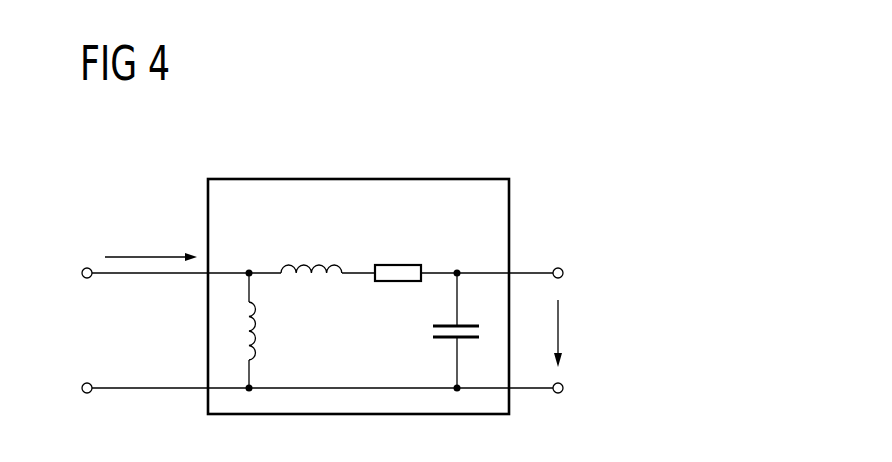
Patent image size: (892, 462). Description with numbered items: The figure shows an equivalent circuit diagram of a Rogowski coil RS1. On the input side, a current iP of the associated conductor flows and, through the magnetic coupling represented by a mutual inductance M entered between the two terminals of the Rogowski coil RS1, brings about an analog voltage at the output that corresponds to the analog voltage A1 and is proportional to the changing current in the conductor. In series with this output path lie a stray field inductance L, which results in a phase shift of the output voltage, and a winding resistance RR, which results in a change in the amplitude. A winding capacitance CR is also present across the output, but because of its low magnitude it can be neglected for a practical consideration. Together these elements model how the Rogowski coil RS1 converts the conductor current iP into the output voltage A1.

The Rogowski coil RS1 is at (386, 155).
The stray field inductance L is at (318, 265).
The winding resistance RR is at (397, 265).
The mutual inductance M is at (255, 322).
The winding capacitance CR is at (428, 332).
The current of the associated conductor iP is at (151, 235).
The analog voltage A1 is at (608, 333).